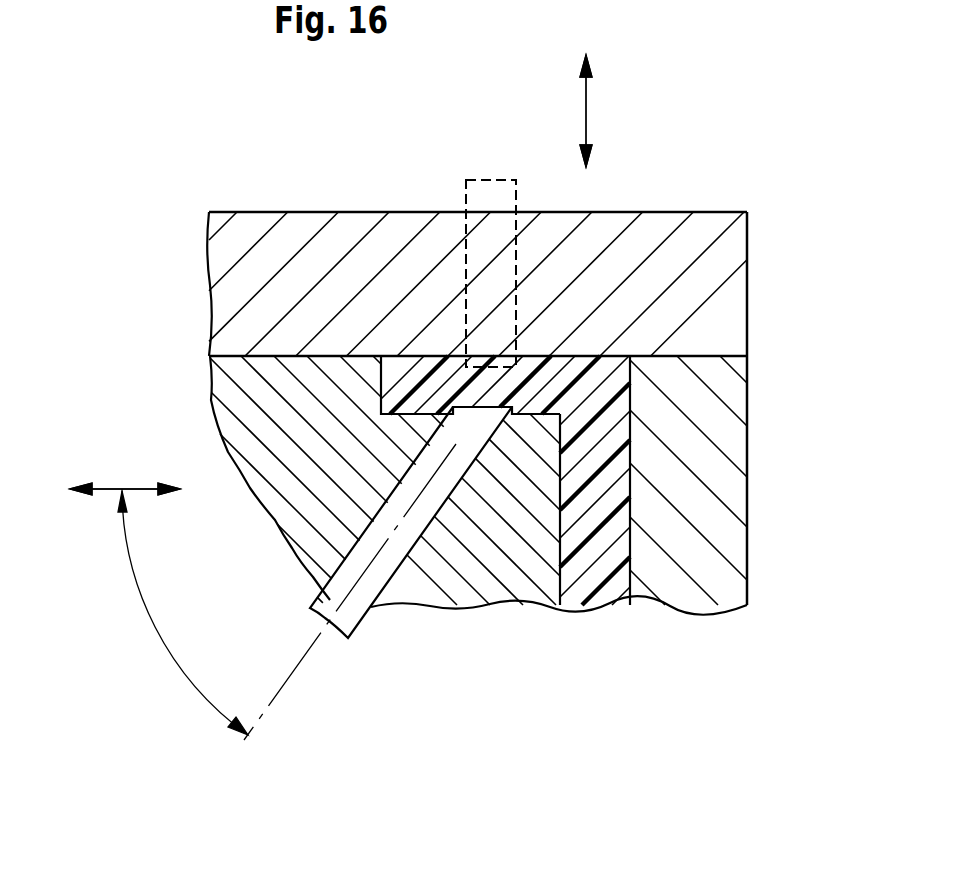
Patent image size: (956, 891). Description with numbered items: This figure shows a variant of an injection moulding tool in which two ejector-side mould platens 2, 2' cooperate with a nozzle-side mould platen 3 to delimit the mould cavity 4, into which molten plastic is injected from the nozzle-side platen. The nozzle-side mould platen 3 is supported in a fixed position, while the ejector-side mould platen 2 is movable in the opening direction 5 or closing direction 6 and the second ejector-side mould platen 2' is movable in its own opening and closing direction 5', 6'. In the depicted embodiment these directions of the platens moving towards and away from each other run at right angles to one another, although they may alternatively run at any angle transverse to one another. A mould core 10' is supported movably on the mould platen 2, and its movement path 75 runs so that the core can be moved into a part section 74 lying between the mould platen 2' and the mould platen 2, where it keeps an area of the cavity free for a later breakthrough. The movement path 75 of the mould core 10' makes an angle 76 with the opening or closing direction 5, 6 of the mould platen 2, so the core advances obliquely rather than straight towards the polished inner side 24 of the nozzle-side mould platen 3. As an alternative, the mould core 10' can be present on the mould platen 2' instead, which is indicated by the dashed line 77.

The ejector-side mould platen 2 is at (385, 480).
The ejector-side mould platen 2' is at (477, 245).
The nozzle-side mould platen 3 is at (722, 518).
The mould cavity 4 is at (603, 572).
The opening direction 5 is at (125, 452).
The closing direction 6 is at (125, 452).
The opening direction 5' is at (640, 110).
The closing direction 6' is at (640, 110).
The mould core 10' is at (478, 227).
The inner side 24 is at (585, 366).
The part section 74 is at (413, 368).
The movement path 75 is at (383, 553).
The angle 76 is at (157, 632).
The dashed line 77 is at (518, 246).